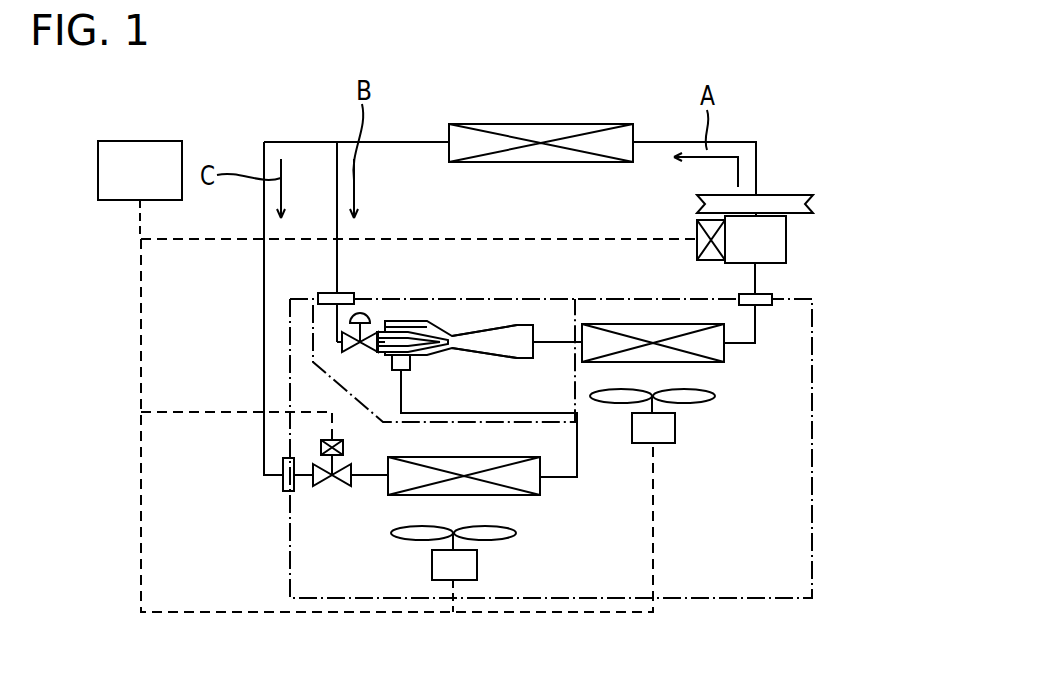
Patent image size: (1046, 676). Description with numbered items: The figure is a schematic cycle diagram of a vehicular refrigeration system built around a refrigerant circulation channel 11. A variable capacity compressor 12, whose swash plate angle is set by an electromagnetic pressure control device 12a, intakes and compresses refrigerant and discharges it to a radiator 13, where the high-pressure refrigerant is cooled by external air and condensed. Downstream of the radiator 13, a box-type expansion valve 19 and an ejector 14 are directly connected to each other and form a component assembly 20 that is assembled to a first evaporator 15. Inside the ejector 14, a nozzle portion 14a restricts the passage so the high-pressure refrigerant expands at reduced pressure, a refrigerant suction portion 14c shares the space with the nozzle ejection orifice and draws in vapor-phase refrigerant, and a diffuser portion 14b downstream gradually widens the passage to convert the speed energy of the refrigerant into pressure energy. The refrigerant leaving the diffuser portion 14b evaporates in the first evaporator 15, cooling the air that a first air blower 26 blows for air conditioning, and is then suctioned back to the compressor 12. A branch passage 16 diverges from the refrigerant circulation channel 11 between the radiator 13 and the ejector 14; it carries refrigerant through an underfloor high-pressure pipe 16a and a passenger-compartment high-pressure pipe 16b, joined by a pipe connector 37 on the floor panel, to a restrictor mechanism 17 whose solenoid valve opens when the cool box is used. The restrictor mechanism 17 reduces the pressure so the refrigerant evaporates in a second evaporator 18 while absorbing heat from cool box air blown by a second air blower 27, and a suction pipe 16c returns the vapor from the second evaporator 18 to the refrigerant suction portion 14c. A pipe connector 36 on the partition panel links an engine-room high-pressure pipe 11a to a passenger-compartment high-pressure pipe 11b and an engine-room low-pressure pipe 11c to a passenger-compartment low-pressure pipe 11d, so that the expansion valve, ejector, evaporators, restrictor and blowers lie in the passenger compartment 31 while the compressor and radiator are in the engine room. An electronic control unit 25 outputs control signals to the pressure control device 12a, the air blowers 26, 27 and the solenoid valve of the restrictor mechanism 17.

The refrigerant circulation channel 11 is at (327, 261).
The engine-room high-pressure pipe 11a is at (336, 275).
The passenger-compartment high-pressure pipe 11b is at (551, 340).
The engine-room low-pressure pipe 11c is at (758, 278).
The passenger-compartment low-pressure pipe 11d is at (758, 330).
The compressor 12 is at (770, 242).
The electromagnetic pressure control device 12a is at (697, 250).
The radiator 13 is at (545, 130).
The ejector 14 is at (471, 325).
The nozzle portion 14a is at (418, 334).
The diffuser portion 14b is at (510, 358).
The refrigerant suction portion 14c is at (410, 365).
The first evaporator 15 is at (724, 352).
The branch passage 16 is at (254, 385).
The underfloor high-pressure pipe 16a is at (264, 447).
The passenger-compartment high-pressure pipe 16b is at (302, 478).
The suction pipe 16c is at (580, 447).
The restrictor mechanism 17 is at (328, 488).
The second evaporator 18 is at (540, 487).
The box-type expansion valve 19 is at (356, 350).
The component assembly 20 is at (342, 392).
The electronic control unit 25 is at (145, 140).
The first air blower 26 is at (675, 428).
The second air blower 27 is at (477, 562).
The passenger compartment 31 is at (785, 600).
The pipe connector 36 is at (772, 305).
The pipe connector 37 is at (283, 487).